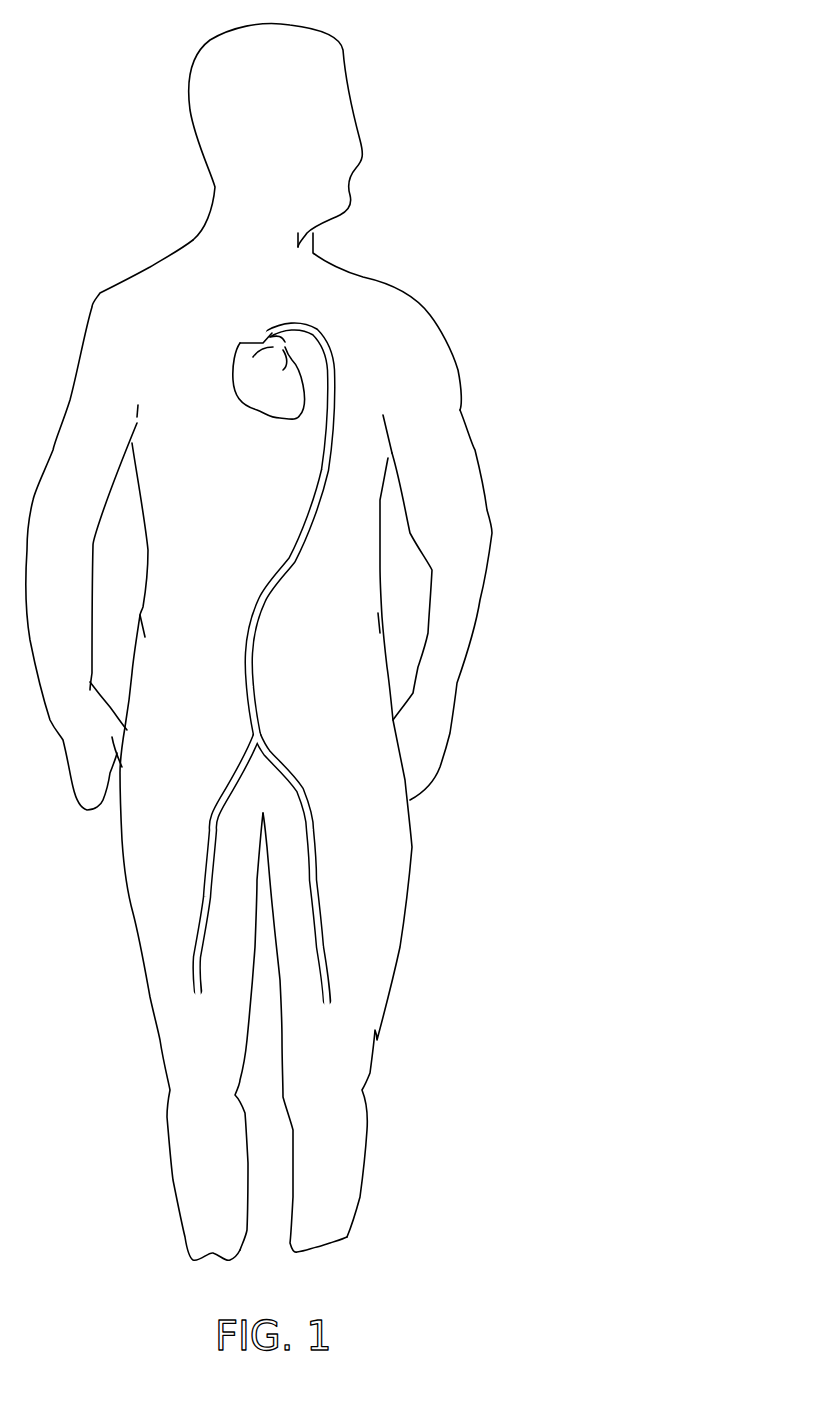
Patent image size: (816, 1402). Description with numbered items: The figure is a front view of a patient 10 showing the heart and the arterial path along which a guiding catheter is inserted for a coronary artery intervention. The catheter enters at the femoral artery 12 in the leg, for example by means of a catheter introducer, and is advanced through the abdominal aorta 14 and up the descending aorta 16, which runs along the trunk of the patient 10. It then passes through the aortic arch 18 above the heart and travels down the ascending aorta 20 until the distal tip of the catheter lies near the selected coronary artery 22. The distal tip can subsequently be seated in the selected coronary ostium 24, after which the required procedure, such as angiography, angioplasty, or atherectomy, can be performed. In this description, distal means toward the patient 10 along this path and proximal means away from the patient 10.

The patient 10 is at (427, 298).
The femoral artery 12 is at (317, 910).
The abdominal aorta 14 is at (262, 703).
The descending aorta 16 is at (340, 400).
The aortic arch 18 is at (317, 330).
The ascending aorta 20 is at (280, 330).
The coronary artery 22 is at (270, 337).
The coronary ostium 24 is at (288, 330).